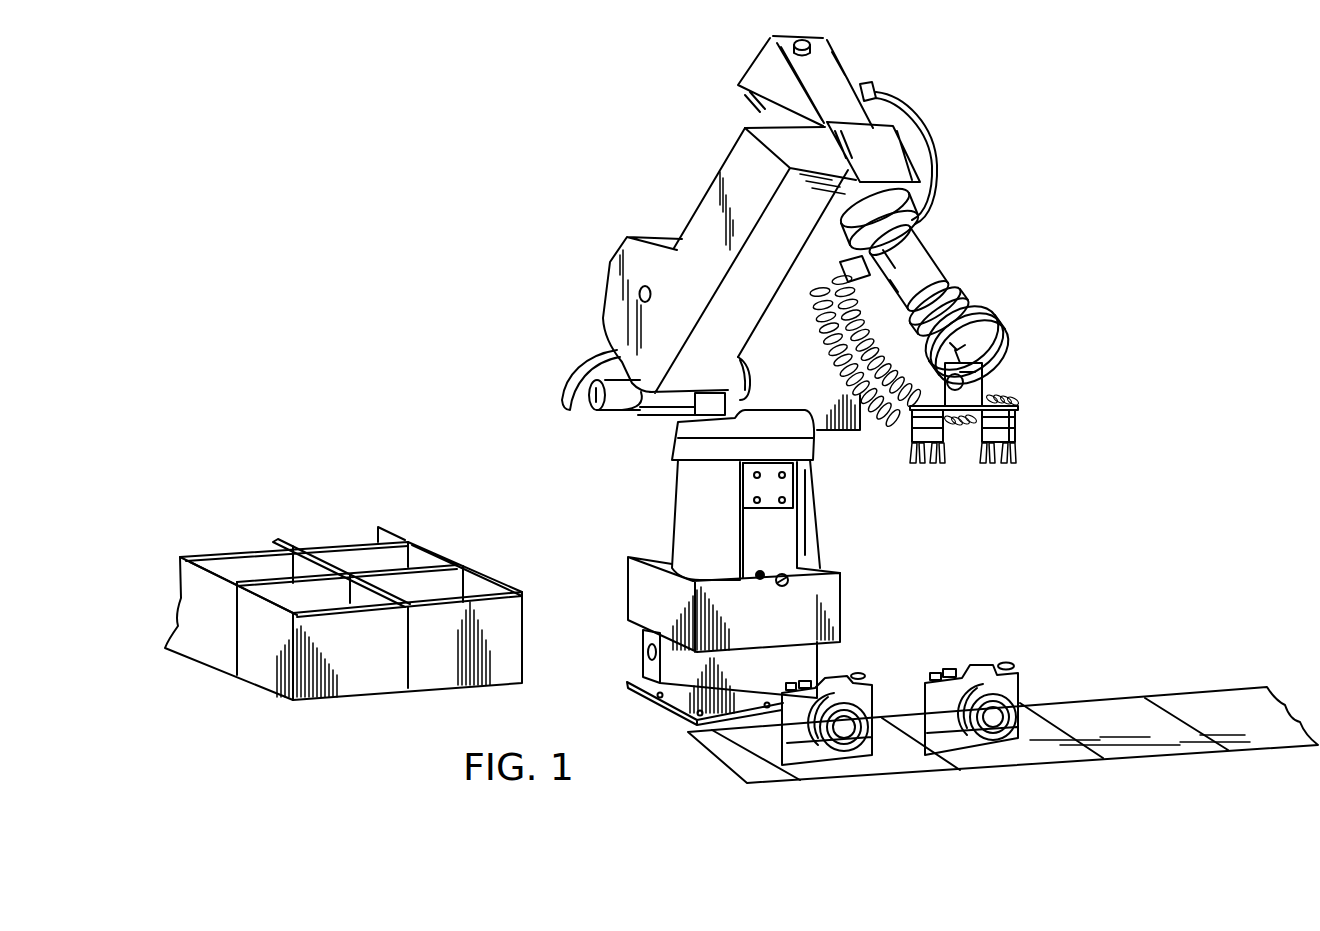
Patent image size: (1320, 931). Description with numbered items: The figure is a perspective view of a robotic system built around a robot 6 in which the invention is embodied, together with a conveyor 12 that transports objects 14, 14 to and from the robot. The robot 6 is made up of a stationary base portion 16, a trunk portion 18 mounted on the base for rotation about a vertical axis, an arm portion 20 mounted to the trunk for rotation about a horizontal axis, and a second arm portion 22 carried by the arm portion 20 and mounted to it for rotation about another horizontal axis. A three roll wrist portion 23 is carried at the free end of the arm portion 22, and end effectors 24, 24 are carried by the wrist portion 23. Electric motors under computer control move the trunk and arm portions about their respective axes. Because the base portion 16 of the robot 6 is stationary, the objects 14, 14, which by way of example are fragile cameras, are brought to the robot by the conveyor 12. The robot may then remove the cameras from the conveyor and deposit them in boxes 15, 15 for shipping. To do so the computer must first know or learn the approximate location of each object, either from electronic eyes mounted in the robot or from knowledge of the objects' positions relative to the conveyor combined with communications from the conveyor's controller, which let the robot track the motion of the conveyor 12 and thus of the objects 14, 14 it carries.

The robot 6 is at (648, 489).
The conveyor 12 is at (733, 791).
The objects 14 is at (948, 748).
The boxes 15 is at (368, 672).
The stationary base portion 16 is at (716, 534).
The trunk portion 18 is at (808, 385).
The arm portion 20 is at (703, 282).
The arm portion 22 is at (893, 165).
The three roll wrist portion 23 is at (996, 311).
The end effectors 24 is at (982, 432).